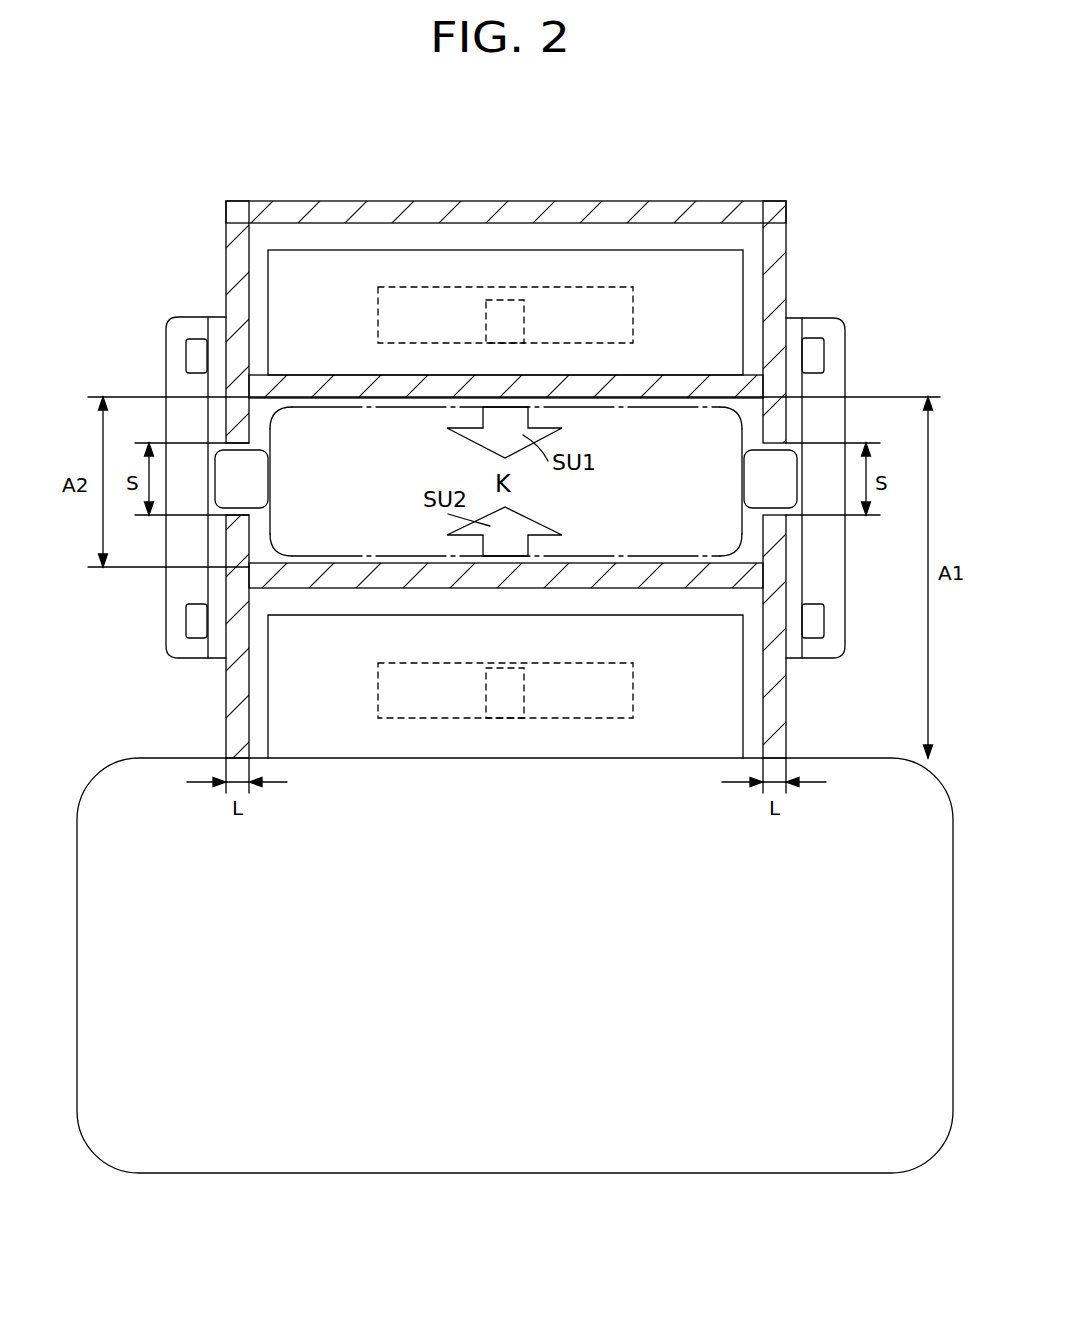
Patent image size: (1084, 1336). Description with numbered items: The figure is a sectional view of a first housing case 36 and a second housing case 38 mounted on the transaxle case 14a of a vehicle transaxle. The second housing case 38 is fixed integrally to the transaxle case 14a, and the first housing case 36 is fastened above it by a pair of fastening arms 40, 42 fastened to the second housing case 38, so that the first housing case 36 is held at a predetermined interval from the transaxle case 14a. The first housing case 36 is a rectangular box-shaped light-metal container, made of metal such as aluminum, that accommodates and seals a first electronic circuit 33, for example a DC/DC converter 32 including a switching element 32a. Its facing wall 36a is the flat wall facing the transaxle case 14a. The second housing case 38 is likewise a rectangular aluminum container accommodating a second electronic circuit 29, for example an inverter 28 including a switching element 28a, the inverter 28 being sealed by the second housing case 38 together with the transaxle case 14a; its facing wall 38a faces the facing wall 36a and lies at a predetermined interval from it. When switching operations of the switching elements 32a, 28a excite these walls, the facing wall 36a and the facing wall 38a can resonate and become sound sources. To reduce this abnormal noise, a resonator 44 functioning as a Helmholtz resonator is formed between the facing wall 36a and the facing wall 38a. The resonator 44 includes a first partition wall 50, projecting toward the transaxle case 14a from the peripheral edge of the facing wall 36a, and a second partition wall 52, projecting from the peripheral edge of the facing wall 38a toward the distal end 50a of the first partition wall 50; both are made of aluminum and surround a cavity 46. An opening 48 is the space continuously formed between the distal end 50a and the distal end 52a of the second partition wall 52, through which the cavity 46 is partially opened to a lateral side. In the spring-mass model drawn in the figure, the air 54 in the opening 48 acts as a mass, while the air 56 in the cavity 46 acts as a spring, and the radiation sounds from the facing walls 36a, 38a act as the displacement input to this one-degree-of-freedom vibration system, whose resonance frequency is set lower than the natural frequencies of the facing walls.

The transaxle case 14a is at (493, 1145).
The inverter 28 is at (583, 700).
The switching element 28a is at (497, 717).
The second electronic circuit 29 is at (665, 725).
The DC/DC converter 32 is at (400, 296).
The switching element 32a is at (492, 328).
The first electronic circuit 33 is at (307, 282).
The first housing case 36 is at (770, 188).
The facing wall 36a is at (522, 392).
The second housing case 38 is at (210, 682).
The facing wall 38a is at (440, 575).
The fastening arm 40 is at (177, 617).
The fastening arm 42 is at (833, 333).
The resonator 44 is at (193, 429).
The cavity 46 is at (409, 552).
The opening 48 is at (229, 499).
The first partition wall 50 is at (272, 418).
The distal end 50a is at (748, 445).
The second partition wall 52 is at (272, 542).
The distal end 52a is at (752, 503).
The air 54 is at (282, 466).
The air 56 is at (650, 410).